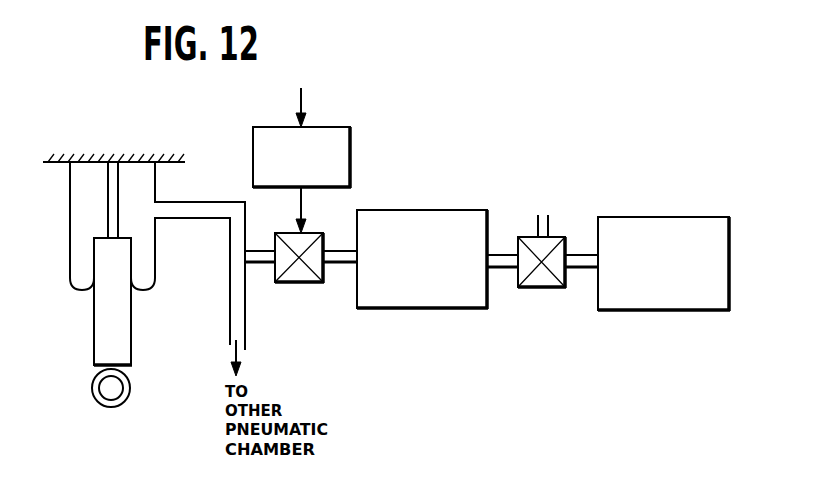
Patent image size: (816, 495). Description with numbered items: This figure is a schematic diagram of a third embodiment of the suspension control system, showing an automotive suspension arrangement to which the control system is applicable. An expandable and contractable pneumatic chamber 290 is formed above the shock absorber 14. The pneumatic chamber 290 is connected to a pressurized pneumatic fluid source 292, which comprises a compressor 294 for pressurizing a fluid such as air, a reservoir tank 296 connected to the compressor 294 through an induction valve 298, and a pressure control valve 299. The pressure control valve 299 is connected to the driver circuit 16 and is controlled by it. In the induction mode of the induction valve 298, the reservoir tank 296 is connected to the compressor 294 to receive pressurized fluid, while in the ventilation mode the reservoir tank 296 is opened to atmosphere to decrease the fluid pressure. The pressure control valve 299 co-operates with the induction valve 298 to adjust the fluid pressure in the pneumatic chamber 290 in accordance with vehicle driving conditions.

The shock absorber 14 is at (94, 340).
The driver circuit 16 is at (351, 146).
The pneumatic chamber 290 is at (70, 278).
The pressurized pneumatic fluid source 292 is at (491, 210).
The compressor 294 is at (700, 311).
The reservoir tank 296 is at (461, 310).
The induction valve 298 is at (553, 288).
The pressure control valve 299 is at (314, 283).